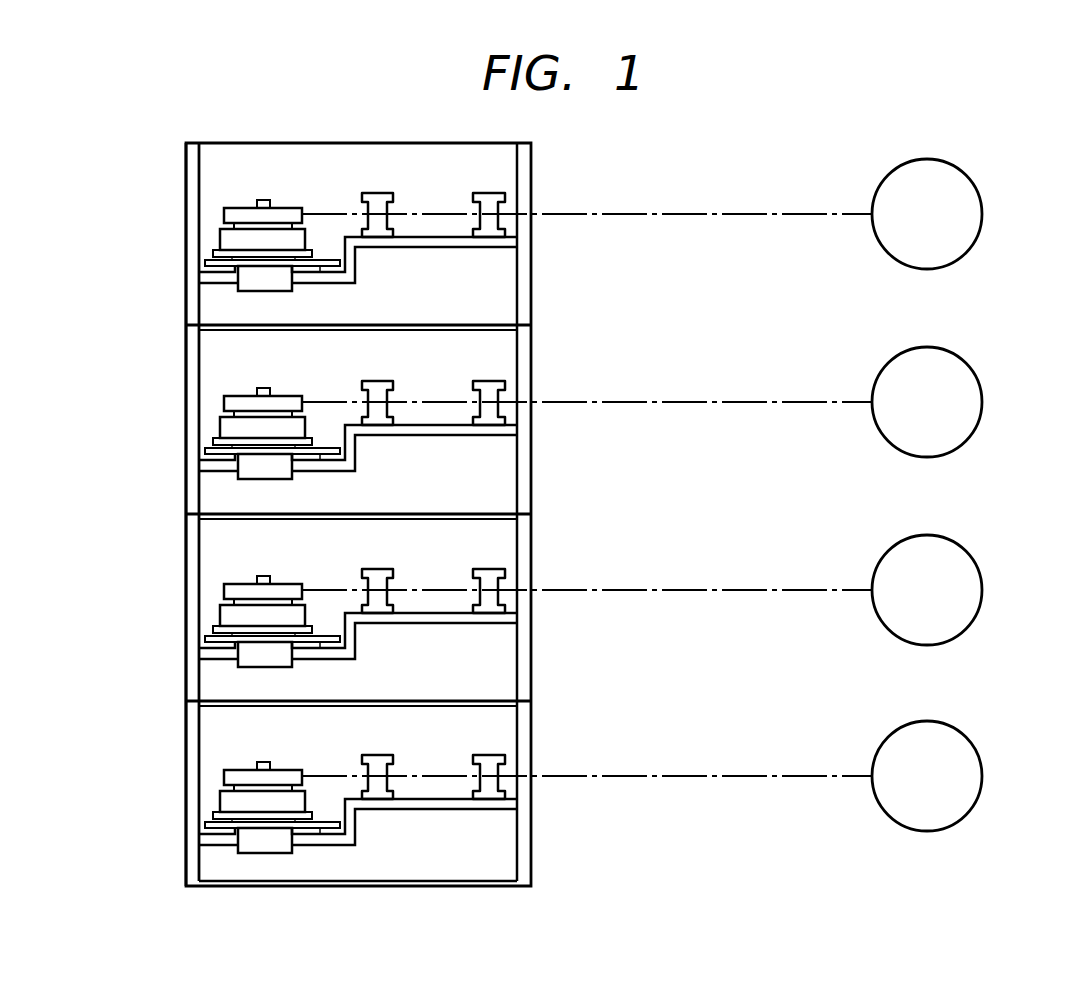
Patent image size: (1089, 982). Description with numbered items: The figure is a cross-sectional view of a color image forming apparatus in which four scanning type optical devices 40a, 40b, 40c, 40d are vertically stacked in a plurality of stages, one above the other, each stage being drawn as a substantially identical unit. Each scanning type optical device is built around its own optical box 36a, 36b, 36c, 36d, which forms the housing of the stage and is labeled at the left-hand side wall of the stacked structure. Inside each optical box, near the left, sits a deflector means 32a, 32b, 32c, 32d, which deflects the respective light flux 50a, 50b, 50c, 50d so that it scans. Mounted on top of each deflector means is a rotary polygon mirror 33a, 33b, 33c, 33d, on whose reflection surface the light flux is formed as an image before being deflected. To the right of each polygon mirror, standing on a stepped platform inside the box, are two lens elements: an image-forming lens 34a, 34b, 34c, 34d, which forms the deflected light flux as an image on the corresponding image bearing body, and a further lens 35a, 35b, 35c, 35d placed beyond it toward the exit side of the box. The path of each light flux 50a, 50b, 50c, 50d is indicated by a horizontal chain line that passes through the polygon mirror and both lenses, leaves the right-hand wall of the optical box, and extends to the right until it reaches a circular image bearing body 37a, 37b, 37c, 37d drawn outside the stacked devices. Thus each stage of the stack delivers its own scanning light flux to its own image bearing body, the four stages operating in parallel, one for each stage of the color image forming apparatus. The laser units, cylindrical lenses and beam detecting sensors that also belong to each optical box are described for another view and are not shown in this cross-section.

The deflector means 32a is at (223, 238).
The deflector means 32b is at (215, 445).
The deflector means 32c is at (215, 633).
The deflector means 32d is at (215, 819).
The rotary polygon mirror 33a is at (290, 213).
The rotary polygon mirror 33b is at (277, 385).
The rotary polygon mirror 33c is at (276, 573).
The rotary polygon mirror 33d is at (277, 759).
The image-forming lens 34a is at (382, 195).
The image-forming lens 34b is at (392, 381).
The image-forming lens 34c is at (391, 569).
The image-forming lens 34d is at (392, 755).
The lens 35a is at (490, 195).
The lens 35b is at (485, 381).
The lens 35c is at (485, 569).
The lens 35d is at (485, 755).
The optical box 36a is at (187, 166).
The optical box 36b is at (187, 354).
The optical box 36c is at (187, 542).
The optical box 36d is at (187, 728).
The image bearing body 37a is at (977, 183).
The image bearing body 37b is at (955, 402).
The image bearing body 37c is at (954, 590).
The image bearing body 37d is at (955, 776).
The scanning type optical device 40a is at (577, 227).
The scanning type optical device 40b is at (577, 415).
The scanning type optical device 40c is at (576, 603).
The scanning type optical device 40d is at (577, 788).
The light flux 50a is at (782, 216).
The light flux 50b is at (587, 432).
The light flux 50c is at (587, 620).
The light flux 50d is at (587, 806).